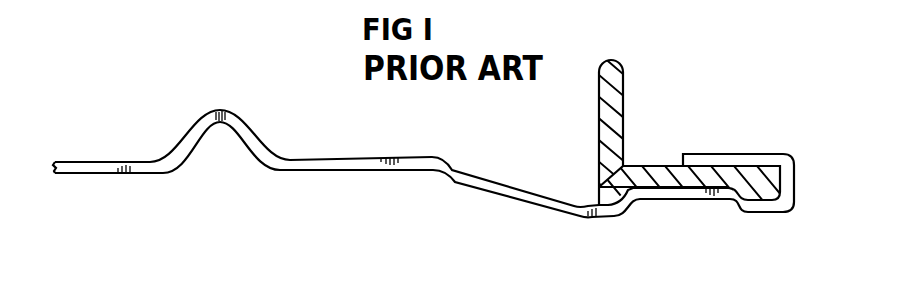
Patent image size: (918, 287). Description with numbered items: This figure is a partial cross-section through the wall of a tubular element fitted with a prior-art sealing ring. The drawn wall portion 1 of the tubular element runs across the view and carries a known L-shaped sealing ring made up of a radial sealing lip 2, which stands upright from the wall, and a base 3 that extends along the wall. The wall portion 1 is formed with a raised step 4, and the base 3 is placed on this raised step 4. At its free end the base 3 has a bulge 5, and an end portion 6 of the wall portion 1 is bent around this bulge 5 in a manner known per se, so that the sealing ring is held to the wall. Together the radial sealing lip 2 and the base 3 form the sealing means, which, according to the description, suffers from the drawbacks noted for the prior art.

The wall portion 1 is at (336, 159).
The radial sealing lip 2 is at (598, 126).
The base 3 is at (649, 165).
The raised step 4 is at (681, 200).
The bulge 5 is at (760, 193).
The end portion 6 is at (728, 157).